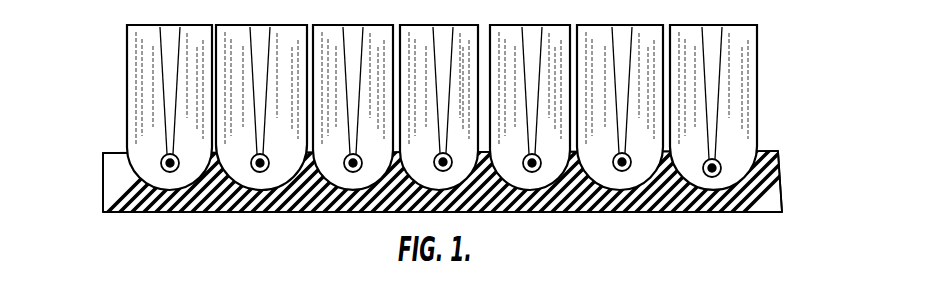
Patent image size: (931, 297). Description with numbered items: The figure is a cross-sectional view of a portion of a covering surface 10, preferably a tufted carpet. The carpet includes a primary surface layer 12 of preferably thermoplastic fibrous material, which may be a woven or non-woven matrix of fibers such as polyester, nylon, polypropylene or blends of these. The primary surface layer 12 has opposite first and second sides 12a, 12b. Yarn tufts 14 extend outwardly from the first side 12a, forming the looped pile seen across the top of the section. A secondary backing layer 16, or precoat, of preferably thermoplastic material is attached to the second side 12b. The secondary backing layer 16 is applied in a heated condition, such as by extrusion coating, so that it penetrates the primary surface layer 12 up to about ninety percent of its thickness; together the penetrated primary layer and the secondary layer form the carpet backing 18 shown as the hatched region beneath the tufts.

The covering surface 10 is at (86, 74).
The primary surface layer 12 is at (786, 147).
The first side 12a is at (757, 140).
The second side 12b is at (754, 176).
The yarn tufts 14 is at (766, 31).
The secondary backing layer 16 is at (791, 190).
The carpet backing 18 is at (89, 180).